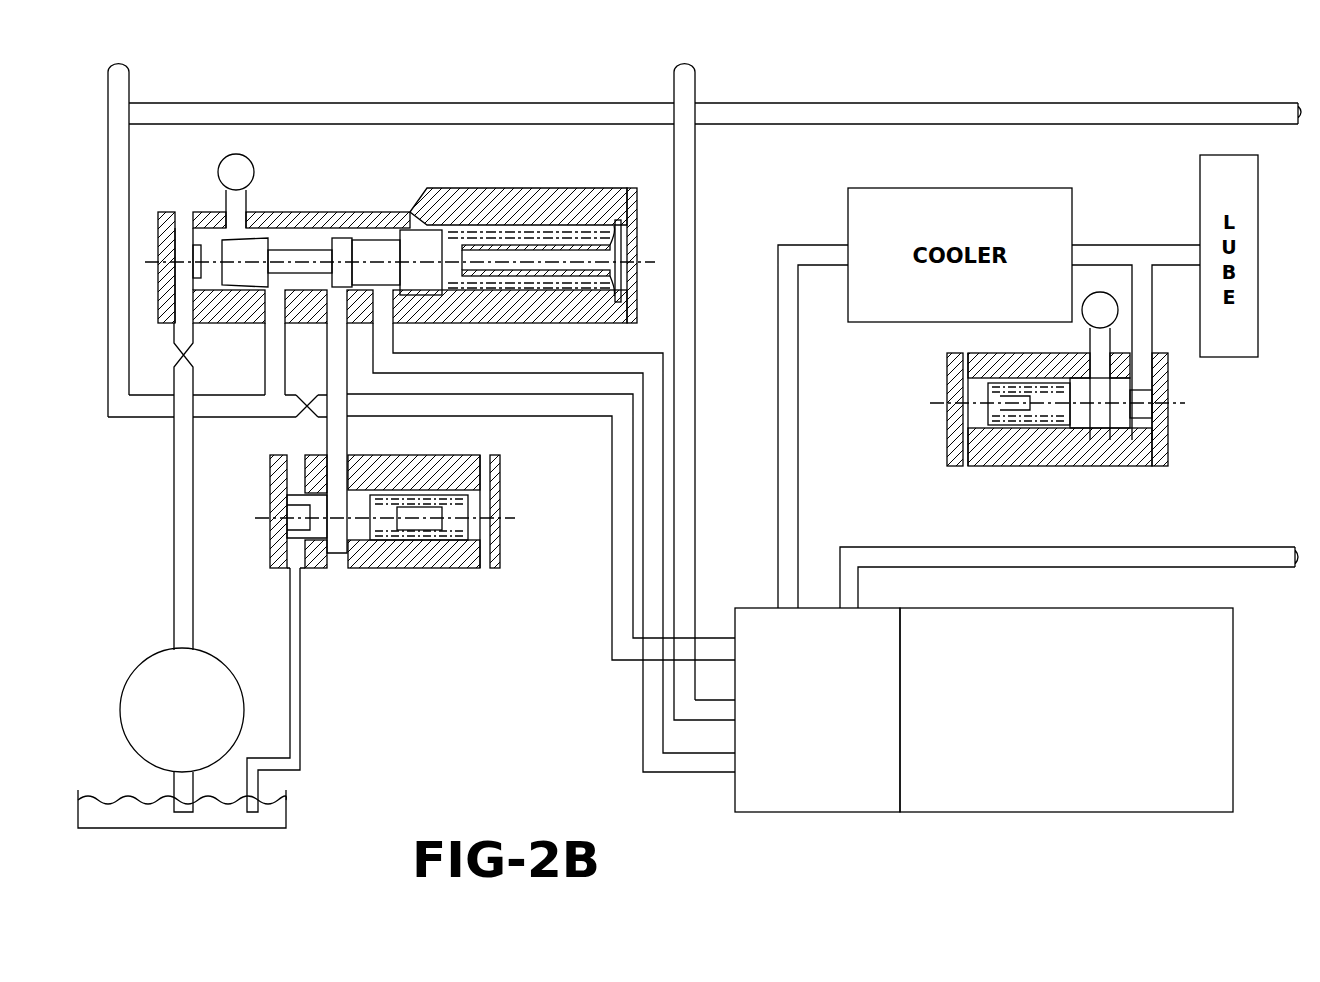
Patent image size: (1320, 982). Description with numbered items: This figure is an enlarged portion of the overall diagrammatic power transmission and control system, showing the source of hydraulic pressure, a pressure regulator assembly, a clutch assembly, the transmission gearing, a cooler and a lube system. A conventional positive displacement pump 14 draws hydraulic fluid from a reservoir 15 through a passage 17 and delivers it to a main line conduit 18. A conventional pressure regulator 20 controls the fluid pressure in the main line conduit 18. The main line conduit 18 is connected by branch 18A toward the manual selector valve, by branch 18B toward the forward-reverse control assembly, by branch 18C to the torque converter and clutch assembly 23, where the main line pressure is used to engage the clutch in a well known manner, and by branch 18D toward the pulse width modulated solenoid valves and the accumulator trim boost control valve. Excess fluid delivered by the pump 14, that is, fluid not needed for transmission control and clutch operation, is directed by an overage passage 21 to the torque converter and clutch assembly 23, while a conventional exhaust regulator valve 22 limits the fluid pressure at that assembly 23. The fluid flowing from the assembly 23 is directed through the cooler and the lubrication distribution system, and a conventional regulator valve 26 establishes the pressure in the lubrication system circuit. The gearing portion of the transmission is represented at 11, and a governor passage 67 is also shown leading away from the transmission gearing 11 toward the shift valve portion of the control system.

The main line branch 18A is at (112, 76).
The main line branch 18B is at (680, 80).
The main line branch 18C is at (697, 716).
The main line branch 18D is at (961, 110).
The main line conduit 18 is at (175, 605).
The pump 14 is at (182, 710).
The passage 17 is at (176, 786).
The reservoir 15 is at (288, 808).
The pressure regulator 20 is at (428, 188).
The exhaust regulator valve 22 is at (389, 574).
The regulator valve 26 is at (1168, 447).
The overage passage 21 is at (718, 646).
The torque converter and clutch assembly 23 is at (817, 710).
The transmission gearing 11 is at (1066, 710).
The governor passage 67 is at (1014, 553).